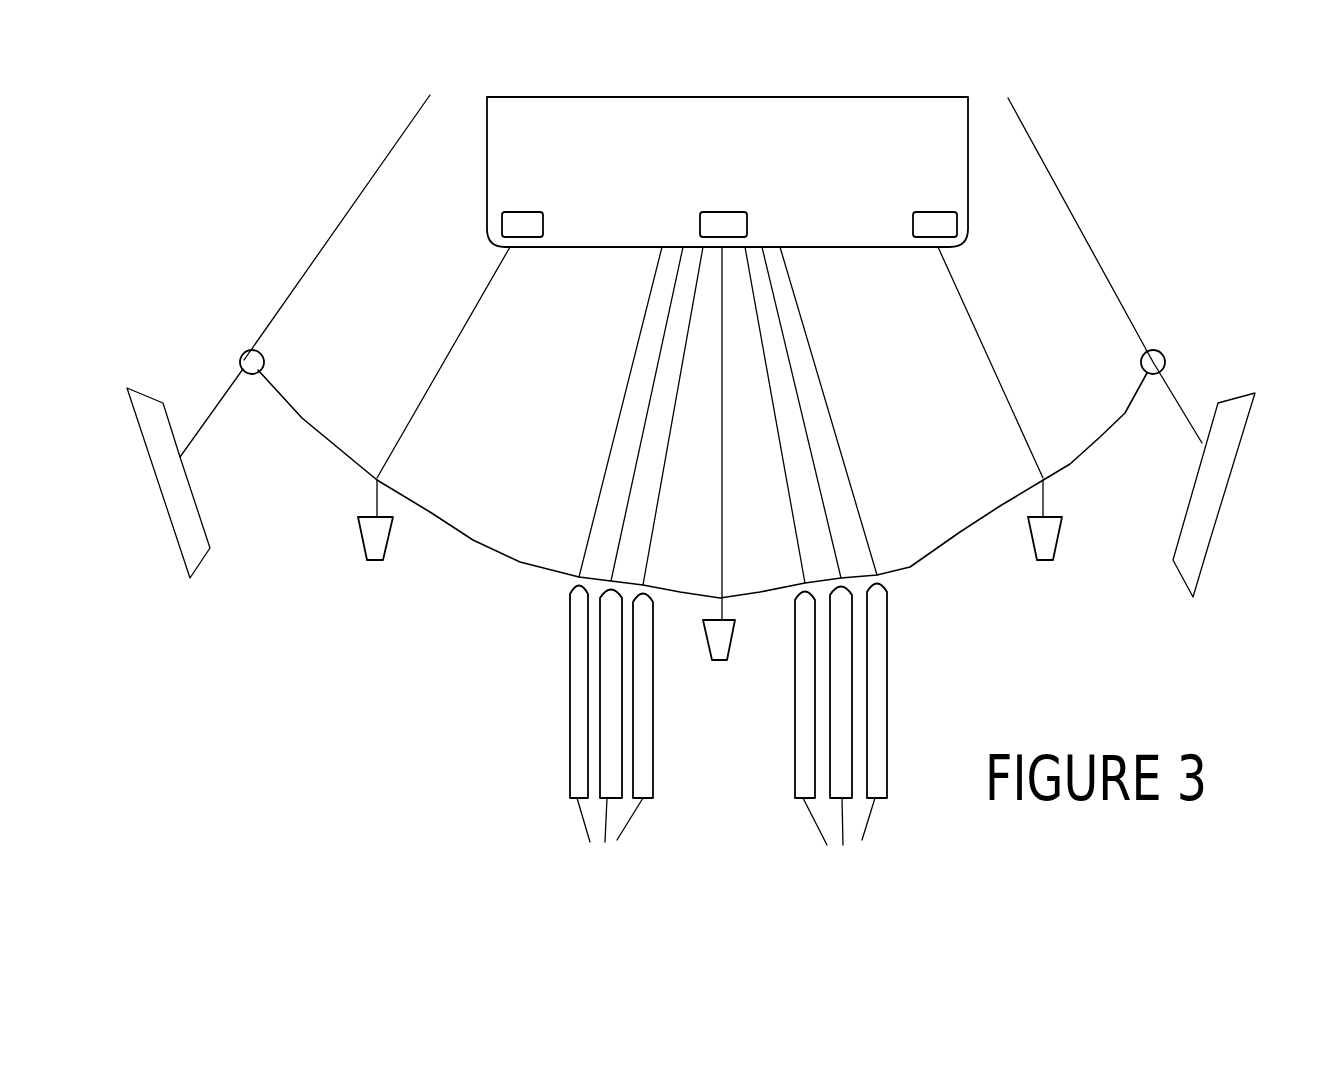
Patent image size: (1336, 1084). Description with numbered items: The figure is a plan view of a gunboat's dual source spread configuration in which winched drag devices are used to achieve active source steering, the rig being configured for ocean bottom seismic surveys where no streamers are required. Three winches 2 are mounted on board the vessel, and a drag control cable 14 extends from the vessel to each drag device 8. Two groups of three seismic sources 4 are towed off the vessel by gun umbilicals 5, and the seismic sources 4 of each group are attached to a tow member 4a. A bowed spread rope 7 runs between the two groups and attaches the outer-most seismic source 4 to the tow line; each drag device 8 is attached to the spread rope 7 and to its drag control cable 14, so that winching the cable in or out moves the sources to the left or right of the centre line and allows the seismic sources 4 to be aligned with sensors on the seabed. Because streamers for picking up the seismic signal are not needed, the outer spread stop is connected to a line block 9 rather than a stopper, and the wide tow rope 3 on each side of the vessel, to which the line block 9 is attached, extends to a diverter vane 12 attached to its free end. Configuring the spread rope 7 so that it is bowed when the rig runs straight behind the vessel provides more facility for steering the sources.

The winch 2 is at (543, 224).
The wide tow rope 3 is at (367, 187).
The seismic source 4 is at (722, 748).
The tow member 4a is at (643, 587).
The gun umbilical 5 is at (673, 407).
The spread rope 7 is at (472, 542).
The drag device 8 is at (378, 560).
The line block 9 is at (245, 368).
The diverter vane 12 is at (197, 573).
The drag control cable 14 is at (443, 353).